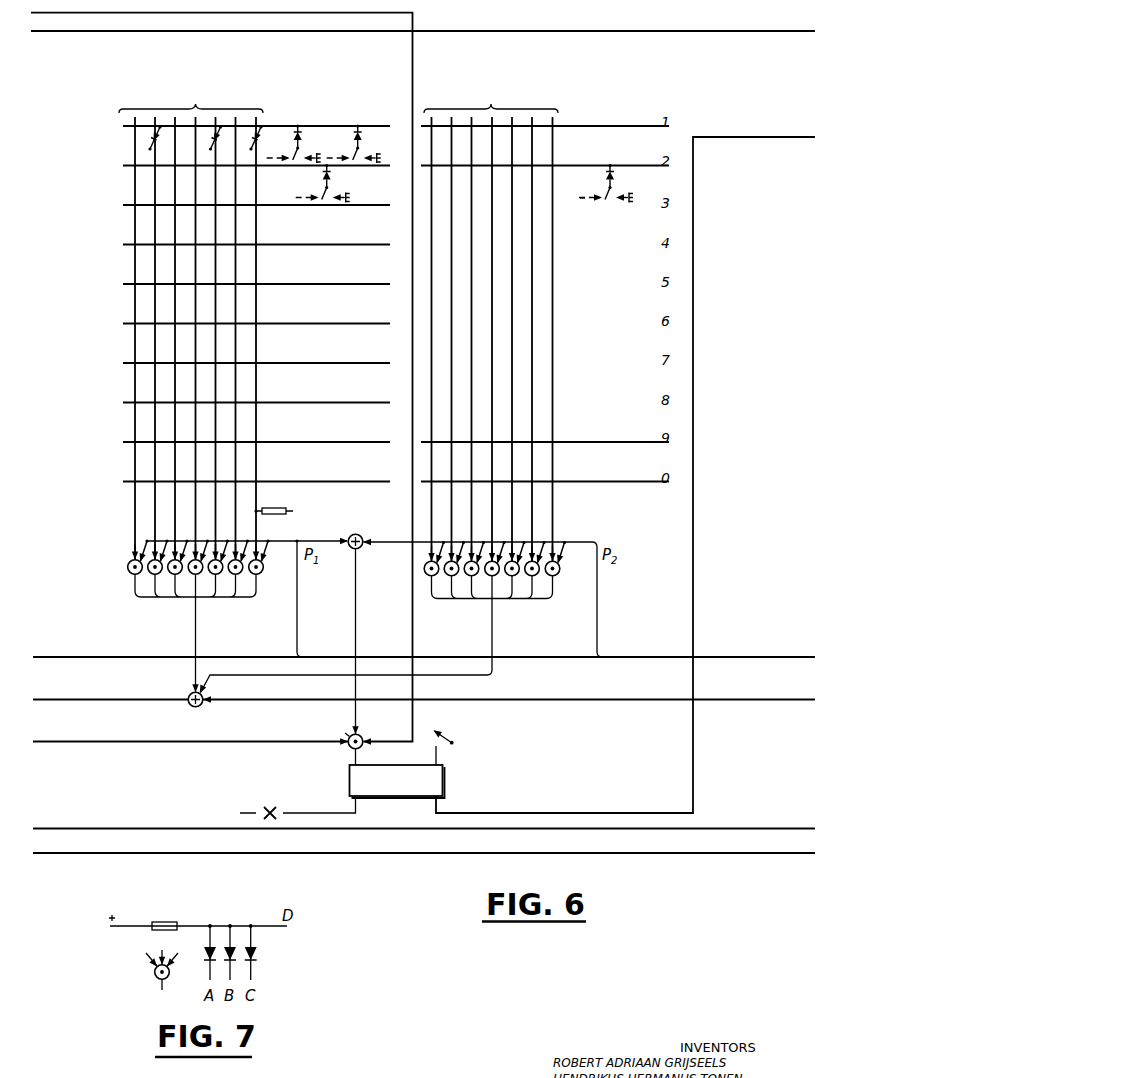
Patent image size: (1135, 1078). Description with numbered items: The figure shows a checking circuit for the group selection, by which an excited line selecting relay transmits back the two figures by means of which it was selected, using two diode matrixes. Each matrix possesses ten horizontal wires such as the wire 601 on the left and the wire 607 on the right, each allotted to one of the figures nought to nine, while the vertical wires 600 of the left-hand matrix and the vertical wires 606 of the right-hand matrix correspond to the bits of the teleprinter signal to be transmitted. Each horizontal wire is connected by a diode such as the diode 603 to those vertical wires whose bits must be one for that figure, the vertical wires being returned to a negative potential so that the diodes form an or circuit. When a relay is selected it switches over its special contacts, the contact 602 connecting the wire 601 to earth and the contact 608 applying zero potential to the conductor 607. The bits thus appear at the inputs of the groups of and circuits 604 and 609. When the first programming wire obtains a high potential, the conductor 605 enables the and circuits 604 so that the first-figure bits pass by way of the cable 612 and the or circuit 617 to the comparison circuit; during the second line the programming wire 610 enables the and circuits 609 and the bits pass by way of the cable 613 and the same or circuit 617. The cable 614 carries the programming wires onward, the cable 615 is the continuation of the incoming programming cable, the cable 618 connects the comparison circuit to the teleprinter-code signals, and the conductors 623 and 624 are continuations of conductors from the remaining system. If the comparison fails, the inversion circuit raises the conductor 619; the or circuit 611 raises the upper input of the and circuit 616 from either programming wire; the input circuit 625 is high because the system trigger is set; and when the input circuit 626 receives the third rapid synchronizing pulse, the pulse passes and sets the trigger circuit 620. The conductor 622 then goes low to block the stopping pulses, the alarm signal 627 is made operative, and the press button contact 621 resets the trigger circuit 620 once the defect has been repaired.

The vertical wires of the left-hand matrix 600 is at (191, 324).
The horizontal wire 601 is at (372, 115).
The contact 602 is at (297, 162).
The diode 603 is at (265, 139).
The group of 'and' circuits 604 is at (238, 568).
The conductor 605 is at (312, 598).
The vertical wires of the right-hand matrix 606 is at (491, 324).
The horizontal wire 607 is at (606, 174).
The contact 608 is at (599, 213).
The group of 'and' circuits 609 is at (505, 570).
The programming wire 610 is at (495, 598).
The 'or' circuit 611 is at (357, 625).
The cable 612 is at (210, 644).
The cable 613 is at (361, 647).
The cable 614 is at (423, 22).
The cable 615 is at (424, 649).
The 'and' circuit 616 is at (347, 750).
The 'or' circuit 617 is at (193, 711).
The cable 618 is at (424, 693).
The conductor 619 is at (190, 750).
The trigger circuit 620 is at (397, 781).
The press button contact 621 is at (461, 746).
The conductor 622 is at (625, 476).
The conductor 623 is at (424, 821).
The conductor 624 is at (424, 863).
The input circuit 625 is at (237, 379).
The input circuit 626 is at (346, 734).
The alarm signal 627 is at (298, 801).